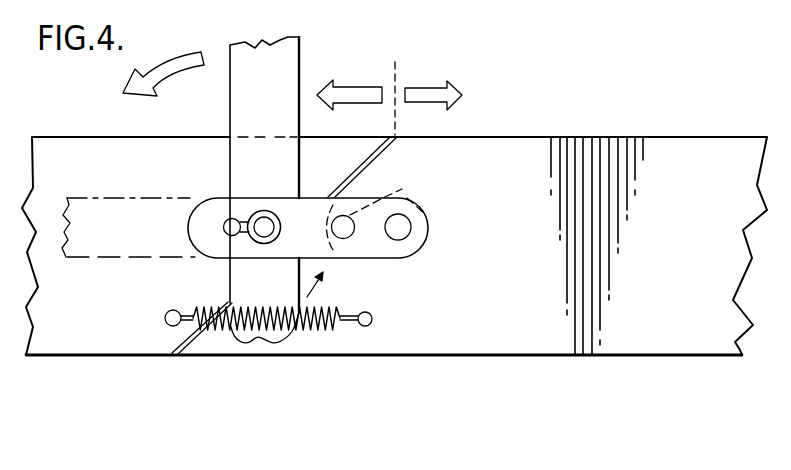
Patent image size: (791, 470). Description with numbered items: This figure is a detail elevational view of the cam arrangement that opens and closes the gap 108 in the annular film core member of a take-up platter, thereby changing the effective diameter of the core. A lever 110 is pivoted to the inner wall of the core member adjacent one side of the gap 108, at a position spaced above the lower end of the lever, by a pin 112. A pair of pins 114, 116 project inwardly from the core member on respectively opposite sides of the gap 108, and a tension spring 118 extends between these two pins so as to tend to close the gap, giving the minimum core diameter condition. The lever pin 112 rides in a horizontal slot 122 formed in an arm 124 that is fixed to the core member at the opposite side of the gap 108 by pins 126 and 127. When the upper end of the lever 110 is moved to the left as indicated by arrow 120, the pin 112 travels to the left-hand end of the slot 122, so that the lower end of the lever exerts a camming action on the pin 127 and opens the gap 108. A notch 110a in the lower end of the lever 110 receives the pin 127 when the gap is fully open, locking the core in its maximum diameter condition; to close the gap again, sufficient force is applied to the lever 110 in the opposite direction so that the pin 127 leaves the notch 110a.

The gap 108 is at (382, 157).
The lever 110 is at (287, 68).
The notch 110a is at (402, 188).
The pin 112 is at (247, 221).
The pin 114 is at (168, 325).
The pin 116 is at (364, 327).
The tension spring 118 is at (325, 305).
The arrow 120 is at (196, 64).
The horizontal slot 122 is at (217, 259).
The arm 124 is at (423, 210).
The pin 126 is at (407, 237).
The pin 127 is at (349, 239).